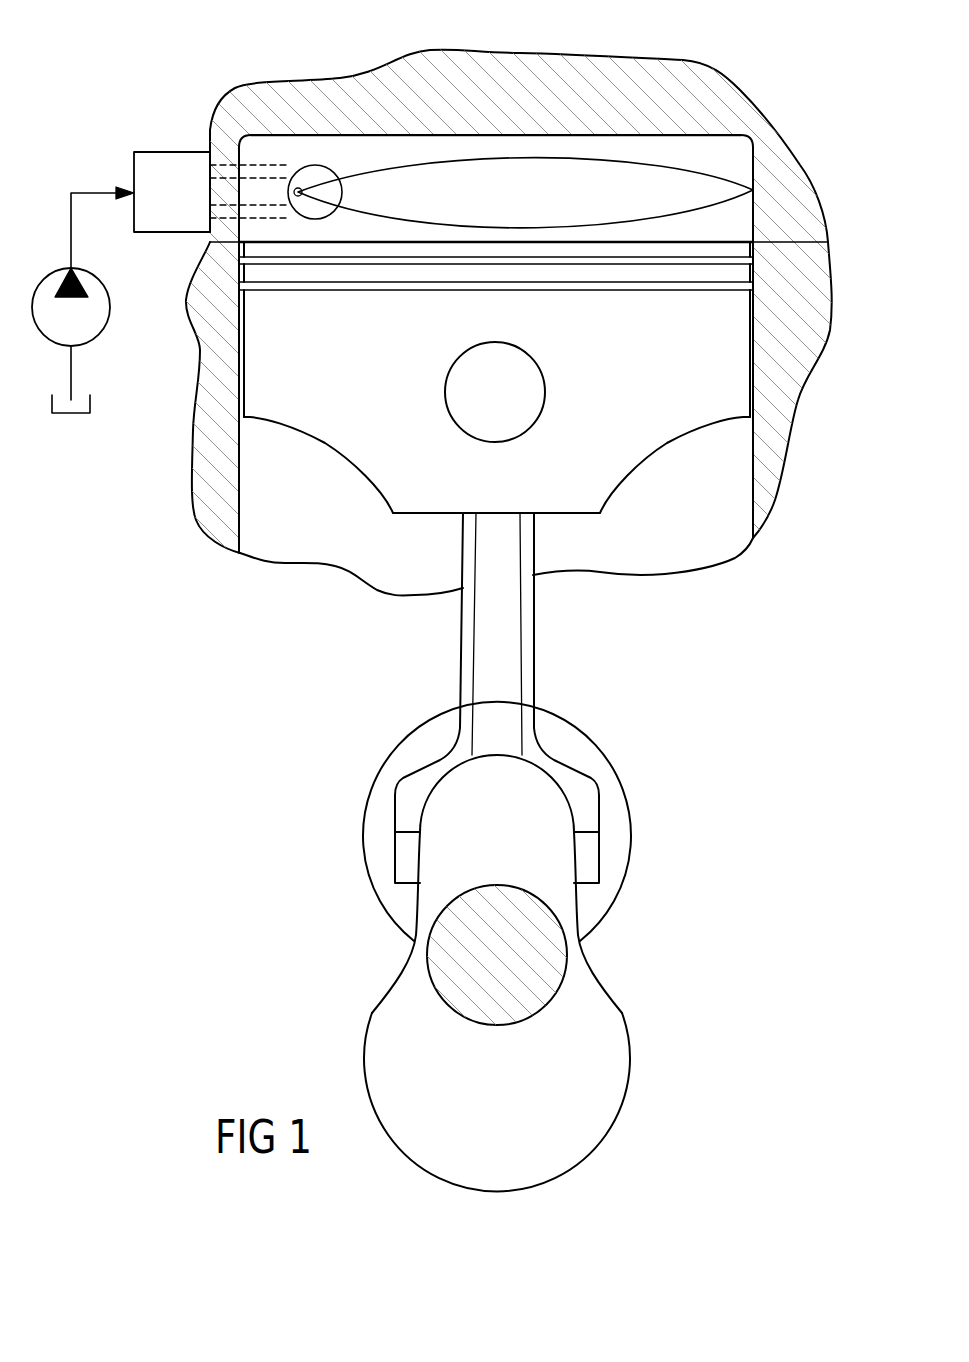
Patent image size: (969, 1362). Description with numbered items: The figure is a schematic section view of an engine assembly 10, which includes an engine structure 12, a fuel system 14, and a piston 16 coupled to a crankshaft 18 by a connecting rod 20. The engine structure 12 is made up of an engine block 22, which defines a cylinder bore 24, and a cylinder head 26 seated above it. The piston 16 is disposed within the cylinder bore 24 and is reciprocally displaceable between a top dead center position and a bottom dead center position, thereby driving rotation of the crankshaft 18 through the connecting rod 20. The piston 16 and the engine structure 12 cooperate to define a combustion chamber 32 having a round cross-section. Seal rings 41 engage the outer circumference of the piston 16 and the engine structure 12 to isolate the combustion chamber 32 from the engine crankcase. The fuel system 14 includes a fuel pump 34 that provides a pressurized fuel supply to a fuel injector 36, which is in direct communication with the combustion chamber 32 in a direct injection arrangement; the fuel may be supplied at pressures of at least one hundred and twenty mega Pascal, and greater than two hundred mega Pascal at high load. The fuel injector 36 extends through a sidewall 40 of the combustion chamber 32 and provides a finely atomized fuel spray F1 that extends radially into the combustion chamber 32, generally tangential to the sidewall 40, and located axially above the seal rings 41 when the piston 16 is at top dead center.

The engine assembly 10 is at (798, 118).
The engine structure 12 is at (210, 110).
The fuel system 14 is at (113, 158).
The piston 16 is at (750, 402).
The crankshaft 18 is at (393, 995).
The connecting rod 20 is at (467, 622).
The engine block 22 is at (800, 380).
The cylinder bore 24 is at (243, 350).
The cylinder head 26 is at (720, 77).
The combustion chamber 32 is at (362, 149).
The fuel pump 34 is at (103, 290).
The fuel injector 36 is at (175, 152).
The sidewall 40 is at (243, 155).
The seal rings 41 is at (733, 257).
The fuel spray F1 is at (537, 155).